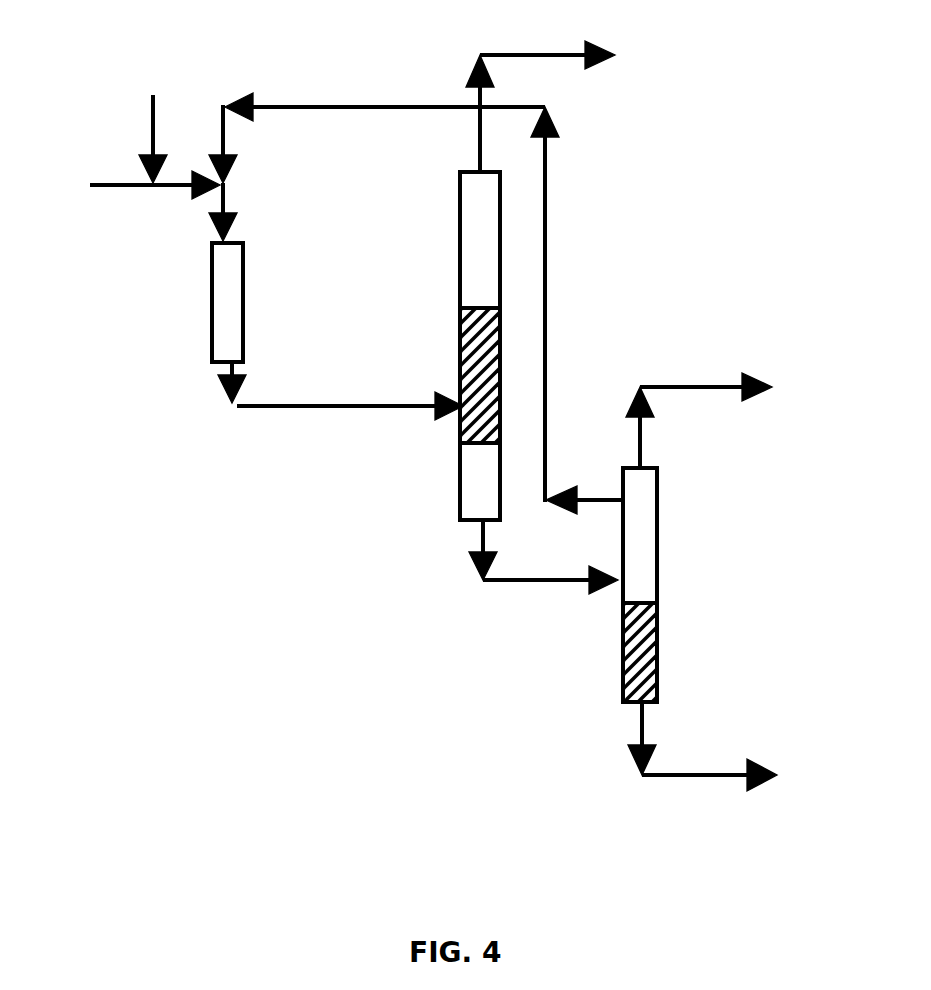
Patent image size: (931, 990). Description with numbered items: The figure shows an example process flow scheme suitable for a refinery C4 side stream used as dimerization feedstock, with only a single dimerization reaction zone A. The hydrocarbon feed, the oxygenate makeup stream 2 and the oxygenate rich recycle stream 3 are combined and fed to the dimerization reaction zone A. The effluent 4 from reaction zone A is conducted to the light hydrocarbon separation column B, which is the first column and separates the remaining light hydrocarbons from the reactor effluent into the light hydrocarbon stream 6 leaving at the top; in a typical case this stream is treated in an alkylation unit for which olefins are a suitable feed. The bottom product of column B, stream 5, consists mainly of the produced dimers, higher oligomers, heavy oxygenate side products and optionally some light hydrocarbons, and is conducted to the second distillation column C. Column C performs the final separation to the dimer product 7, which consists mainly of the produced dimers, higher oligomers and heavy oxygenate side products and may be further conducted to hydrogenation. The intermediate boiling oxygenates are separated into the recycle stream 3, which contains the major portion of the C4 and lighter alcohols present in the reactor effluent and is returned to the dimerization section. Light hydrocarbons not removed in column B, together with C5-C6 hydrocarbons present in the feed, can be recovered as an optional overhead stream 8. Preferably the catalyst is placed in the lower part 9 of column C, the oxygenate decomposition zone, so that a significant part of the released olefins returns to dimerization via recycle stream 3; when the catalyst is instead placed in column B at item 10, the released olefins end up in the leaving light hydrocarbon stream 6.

The oxygenate makeup stream 2 is at (155, 127).
The oxygenate rich recycle stream 3 is at (415, 283).
The effluent 4 is at (350, 428).
The bottom product stream 5 is at (550, 600).
The light hydrocarbon stream 6 is at (566, 49).
The dimer product 7 is at (709, 794).
The overhead stream 8 is at (706, 356).
The lower part of column C (oxygenate decomposition zone) 9 is at (614, 671).
The catalyst placement in column B 10 is at (462, 403).
The dimerization reaction zone A is at (214, 293).
The light hydrocarbon separation column B is at (478, 317).
The second distillation column C is at (638, 581).